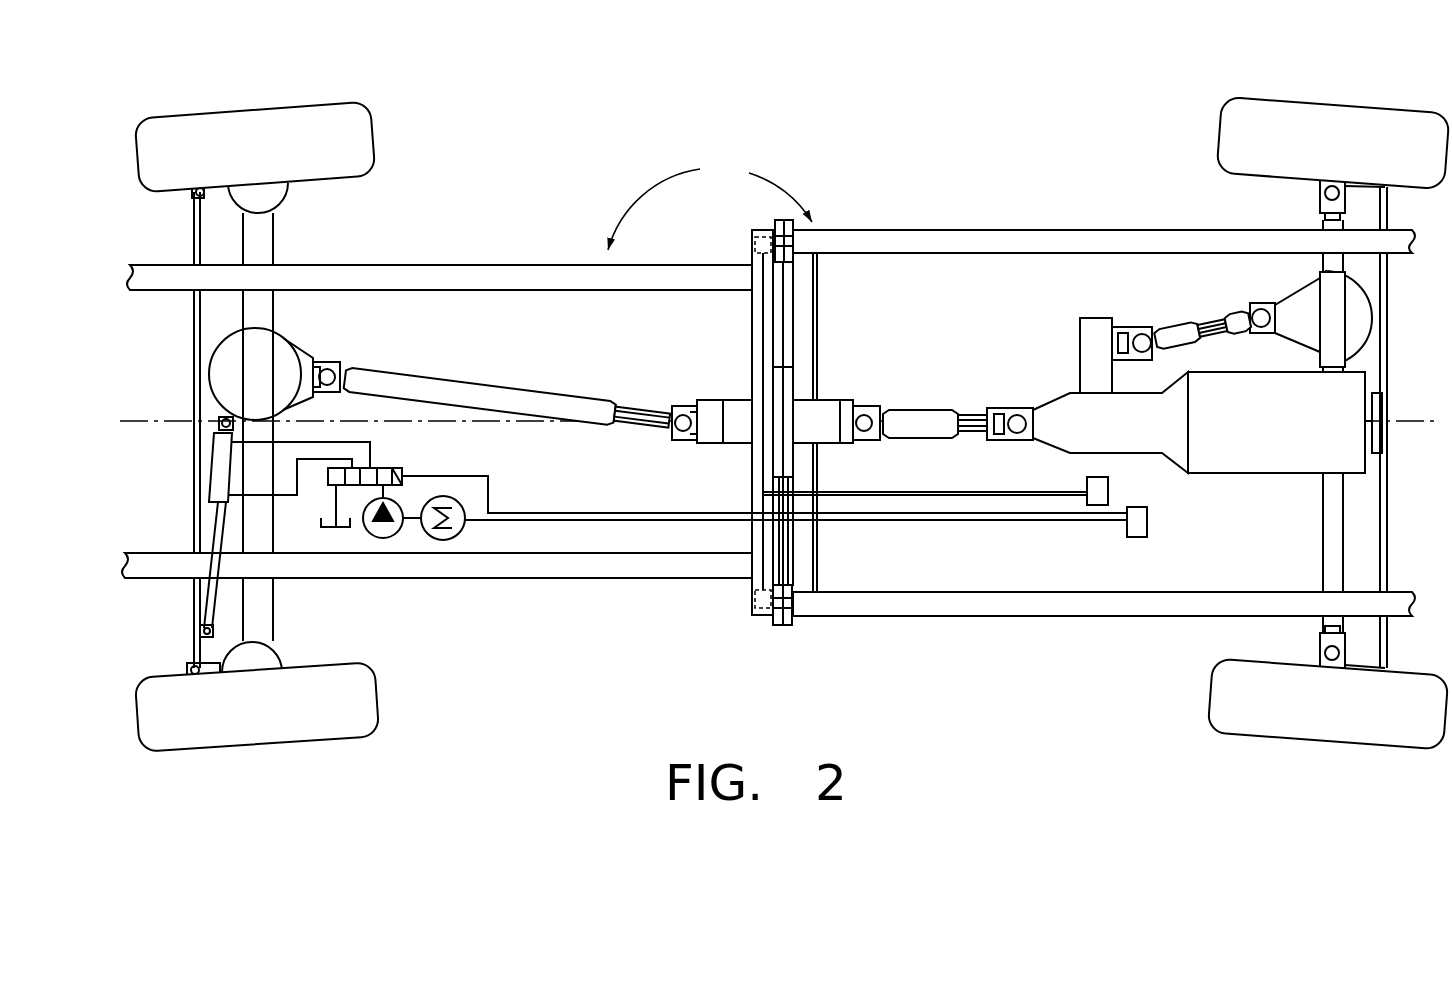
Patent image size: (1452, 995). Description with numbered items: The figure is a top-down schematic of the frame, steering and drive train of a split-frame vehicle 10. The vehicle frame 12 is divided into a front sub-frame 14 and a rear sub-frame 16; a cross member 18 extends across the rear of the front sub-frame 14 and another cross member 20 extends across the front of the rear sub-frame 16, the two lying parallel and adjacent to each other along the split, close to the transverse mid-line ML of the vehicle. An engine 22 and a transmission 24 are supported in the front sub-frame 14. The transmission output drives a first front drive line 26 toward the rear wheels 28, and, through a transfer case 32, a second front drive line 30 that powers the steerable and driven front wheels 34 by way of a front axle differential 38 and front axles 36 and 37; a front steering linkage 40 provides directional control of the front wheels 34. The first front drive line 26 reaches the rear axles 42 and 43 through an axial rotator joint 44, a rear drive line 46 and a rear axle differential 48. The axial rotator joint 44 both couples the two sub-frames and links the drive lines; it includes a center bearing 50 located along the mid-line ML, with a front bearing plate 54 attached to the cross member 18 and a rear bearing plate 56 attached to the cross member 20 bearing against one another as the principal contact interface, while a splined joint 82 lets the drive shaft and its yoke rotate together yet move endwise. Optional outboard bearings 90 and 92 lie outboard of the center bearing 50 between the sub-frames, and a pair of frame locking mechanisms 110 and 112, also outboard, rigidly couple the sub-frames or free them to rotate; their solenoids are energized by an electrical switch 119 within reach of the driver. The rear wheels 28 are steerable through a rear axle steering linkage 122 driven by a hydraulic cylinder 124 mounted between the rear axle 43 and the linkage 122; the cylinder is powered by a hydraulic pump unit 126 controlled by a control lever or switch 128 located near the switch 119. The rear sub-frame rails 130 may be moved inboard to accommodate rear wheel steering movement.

The split-frame vehicle 10 is at (1003, 193).
The vehicle frame 12 is at (710, 197).
The front sub-frame 14 is at (1066, 228).
The rear sub-frame 16 is at (430, 260).
The front sub-frame cross member 18 is at (817, 293).
The rear sub-frame cross member 20 is at (752, 305).
The engine 22 is at (1288, 470).
The transmission 24 is at (1050, 440).
The first front drive line 26 is at (1173, 332).
The rear wheels 28 is at (373, 140).
The second front drive line 30 is at (920, 412).
The transfer case 32 is at (1080, 345).
The front wheels 34 is at (1320, 108).
The front axle 36 is at (1320, 262).
The front axle 37 is at (1323, 560).
The front axle differential 38 is at (1305, 343).
The front steering linkage 40 is at (1388, 558).
The rear axle 42 is at (274, 238).
The rear axle 43 is at (273, 605).
The axial rotator joint 44 is at (746, 393).
The rear drive line 46 is at (480, 387).
The rear axle differential 48 is at (290, 345).
The center bearing 50 is at (786, 352).
The front bearing plate 54 is at (788, 468).
The rear bearing plate 56 is at (773, 462).
The joint 82 is at (630, 432).
The outboard bearing 90 is at (782, 214).
The outboard bearing 92 is at (783, 628).
The frame locking mechanism 110 is at (750, 243).
The frame locking mechanism 112 is at (751, 603).
The electrical switch 119 is at (1108, 491).
The rear axle steering linkage 122 is at (195, 333).
The hydraulic cylinder 124 is at (214, 470).
The hydraulic pump unit 126 is at (410, 462).
The control lever or switch 128 is at (1147, 522).
The rear sub-frame rails 130 is at (490, 266).
The mid-line ML is at (172, 418).